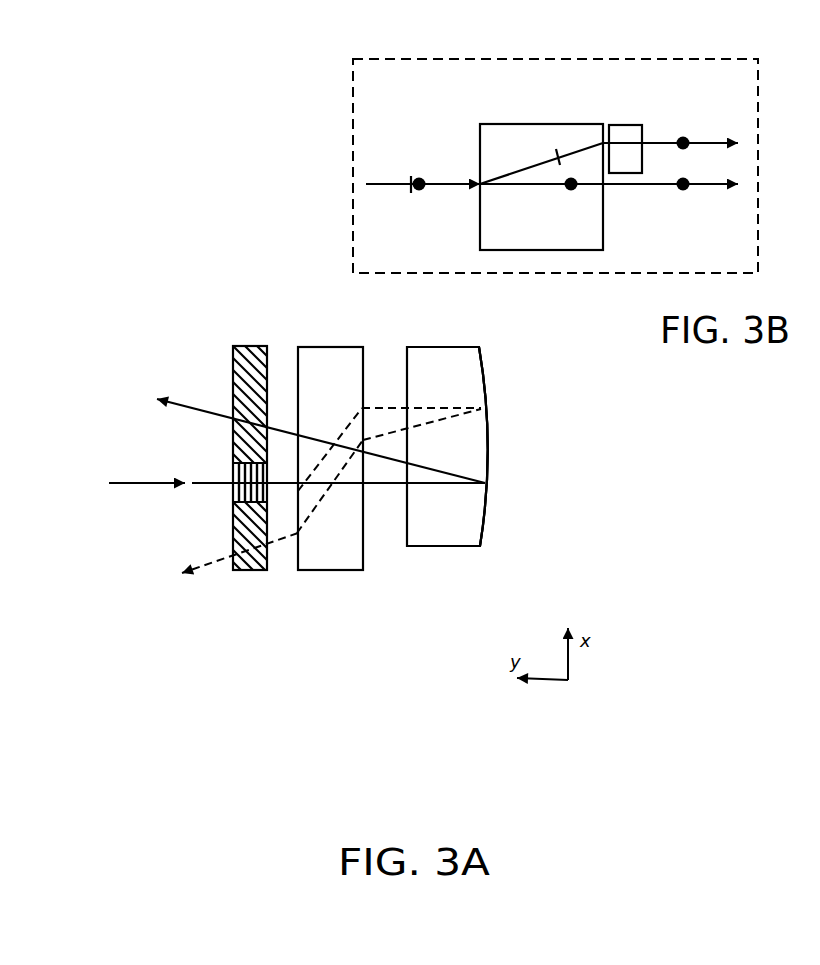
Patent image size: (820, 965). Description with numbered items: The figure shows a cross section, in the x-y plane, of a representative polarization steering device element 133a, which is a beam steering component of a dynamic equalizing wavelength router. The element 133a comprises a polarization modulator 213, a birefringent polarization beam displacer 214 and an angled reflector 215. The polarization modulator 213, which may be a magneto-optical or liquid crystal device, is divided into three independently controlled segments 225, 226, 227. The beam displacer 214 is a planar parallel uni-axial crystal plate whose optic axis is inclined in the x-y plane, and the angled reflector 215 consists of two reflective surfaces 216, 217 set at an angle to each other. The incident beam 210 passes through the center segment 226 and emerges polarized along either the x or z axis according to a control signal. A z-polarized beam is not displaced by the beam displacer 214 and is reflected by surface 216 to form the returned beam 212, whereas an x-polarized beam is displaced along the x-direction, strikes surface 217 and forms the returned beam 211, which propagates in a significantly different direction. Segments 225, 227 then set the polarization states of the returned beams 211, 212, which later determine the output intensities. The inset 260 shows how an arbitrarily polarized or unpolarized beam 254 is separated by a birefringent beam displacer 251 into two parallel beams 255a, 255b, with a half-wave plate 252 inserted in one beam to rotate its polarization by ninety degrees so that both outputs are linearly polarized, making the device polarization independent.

In FIG. 3B, the inset 260 is at (352, 58).
In FIG. 3B, the birefringent beam displacer 251 is at (497, 122).
In FIG. 3B, the half-wave plate 252 is at (617, 125).
In FIG. 3B, the beam 254 is at (442, 182).
In FIG. 3B, the parallel beam 255a is at (707, 142).
In FIG. 3B, the parallel beam 255b is at (698, 186).
In FIG. 3A, the polarization steering device element 133a is at (130, 250).
In FIG. 3A, the incident beam 210 is at (137, 480).
In FIG. 3A, the returned beam 211 is at (208, 566).
In FIG. 3A, the returned beam 212 is at (188, 405).
In FIG. 3A, the polarization modulator 213 is at (224, 477).
In FIG. 3A, the birefringent polarization beam displacer 214 is at (332, 572).
In FIG. 3A, the angled reflector 215 is at (452, 548).
In FIG. 3A, the reflective surface 216 is at (487, 503).
In FIG. 3A, the reflective surface 217 is at (487, 380).
In FIG. 3A, the segment 225 is at (233, 537).
In FIG. 3A, the center segment 226 is at (233, 475).
In FIG. 3A, the segment 227 is at (233, 362).